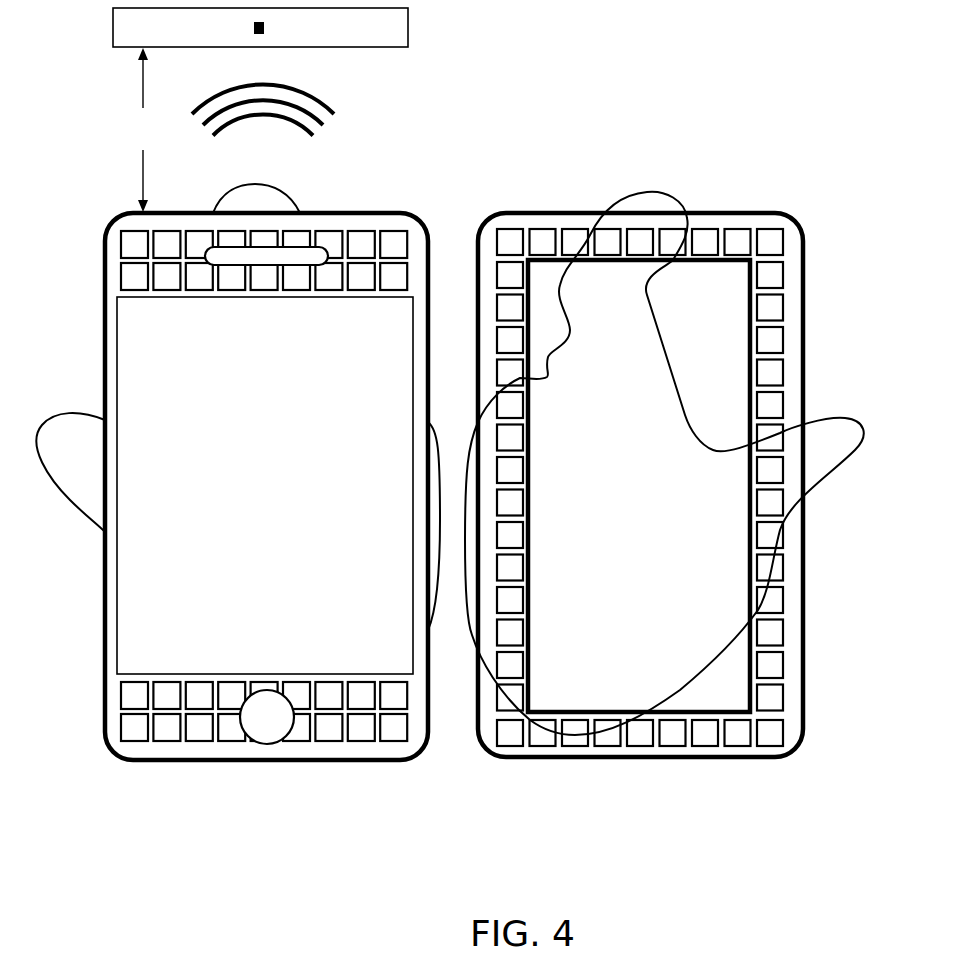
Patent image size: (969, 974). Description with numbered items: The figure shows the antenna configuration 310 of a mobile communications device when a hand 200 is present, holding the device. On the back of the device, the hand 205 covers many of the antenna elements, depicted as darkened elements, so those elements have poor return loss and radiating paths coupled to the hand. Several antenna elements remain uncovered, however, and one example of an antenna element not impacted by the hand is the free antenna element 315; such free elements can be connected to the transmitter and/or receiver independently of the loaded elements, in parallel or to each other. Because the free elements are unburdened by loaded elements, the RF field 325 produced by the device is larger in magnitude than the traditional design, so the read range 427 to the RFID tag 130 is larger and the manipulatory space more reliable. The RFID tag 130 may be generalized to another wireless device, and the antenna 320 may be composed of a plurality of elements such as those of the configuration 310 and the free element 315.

The RFID tag 130 is at (260, 27).
The read range 427 is at (141, 130).
The RF field 325 is at (263, 100).
The hand 200 is at (275, 185).
The antenna configuration 310 is at (393, 232).
The hand 205 is at (652, 182).
The free antenna element 315 is at (767, 243).
The antenna 320 is at (733, 348).